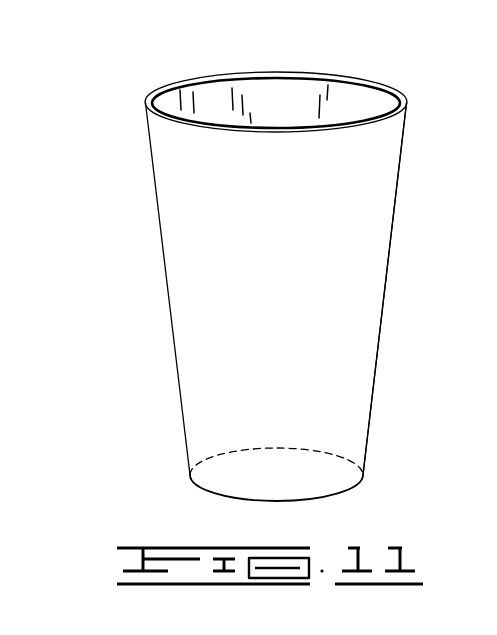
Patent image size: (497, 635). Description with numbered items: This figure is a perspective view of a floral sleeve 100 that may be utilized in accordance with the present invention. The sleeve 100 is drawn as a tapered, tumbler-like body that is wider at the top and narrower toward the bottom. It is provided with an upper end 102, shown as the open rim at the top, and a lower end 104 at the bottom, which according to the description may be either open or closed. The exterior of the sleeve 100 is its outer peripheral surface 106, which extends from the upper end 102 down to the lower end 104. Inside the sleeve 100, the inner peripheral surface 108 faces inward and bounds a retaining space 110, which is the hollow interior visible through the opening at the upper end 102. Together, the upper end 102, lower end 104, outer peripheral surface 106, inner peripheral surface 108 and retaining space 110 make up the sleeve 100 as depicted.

The sleeve 100 is at (138, 212).
The upper end 102 is at (398, 93).
The lower end 104 is at (327, 497).
The outer peripheral surface 106 is at (353, 330).
The inner peripheral surface 108 is at (216, 94).
The retaining space 110 is at (287, 103).